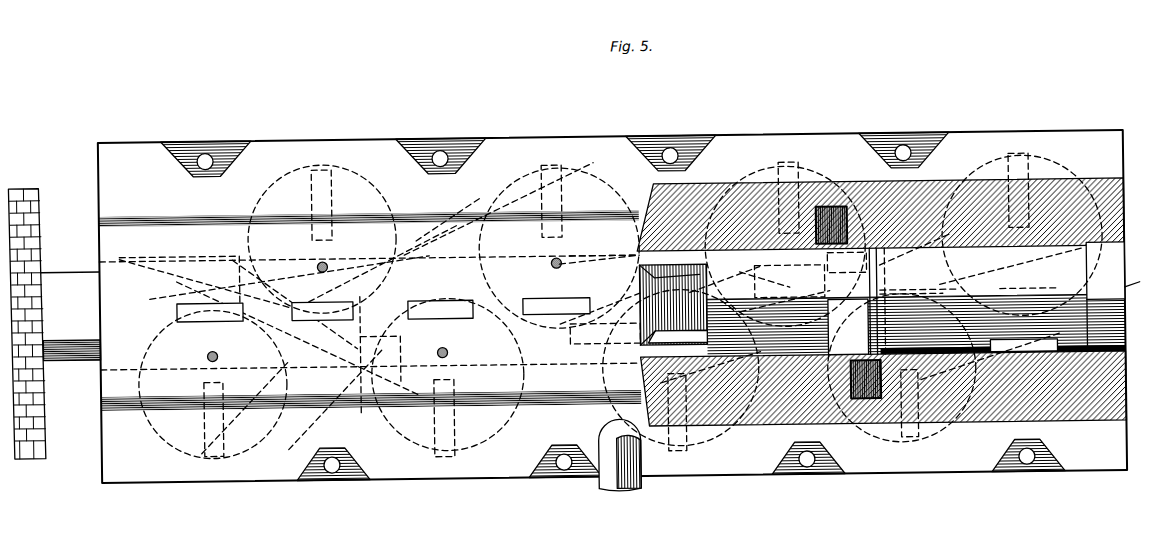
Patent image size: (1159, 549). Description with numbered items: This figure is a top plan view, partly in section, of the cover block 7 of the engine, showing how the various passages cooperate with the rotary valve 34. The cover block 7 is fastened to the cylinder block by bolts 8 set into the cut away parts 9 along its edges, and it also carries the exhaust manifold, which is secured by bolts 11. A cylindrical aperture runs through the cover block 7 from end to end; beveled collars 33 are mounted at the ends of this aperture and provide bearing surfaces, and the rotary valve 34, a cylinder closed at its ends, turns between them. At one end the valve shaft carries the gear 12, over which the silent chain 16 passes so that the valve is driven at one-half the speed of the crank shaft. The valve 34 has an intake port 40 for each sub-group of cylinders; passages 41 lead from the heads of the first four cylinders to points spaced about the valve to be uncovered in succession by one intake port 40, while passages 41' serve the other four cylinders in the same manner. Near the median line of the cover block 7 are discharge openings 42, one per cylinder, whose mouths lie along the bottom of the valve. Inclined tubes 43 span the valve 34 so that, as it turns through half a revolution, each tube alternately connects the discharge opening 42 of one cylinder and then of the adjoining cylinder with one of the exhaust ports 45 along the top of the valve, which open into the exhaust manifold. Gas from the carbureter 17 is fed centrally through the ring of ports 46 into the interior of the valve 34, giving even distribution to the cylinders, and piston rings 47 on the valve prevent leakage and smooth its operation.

The cover block 7 is at (526, 160).
The bolts 8 is at (207, 155).
The cut away parts 9 is at (230, 160).
The bolts 11 is at (319, 266).
The gear 12 is at (42, 270).
The silent chain 16 is at (38, 218).
The carbureter 17 is at (625, 497).
The beveled collars 33 is at (1137, 288).
The rotary valve 34 is at (1105, 296).
The intake port 40 is at (395, 302).
The passages 41 is at (389, 312).
The passages 41' is at (853, 306).
The discharge openings 42 is at (752, 300).
The tubes 43 is at (245, 275).
The exhaust ports 45 is at (330, 305).
The ring of ports 46 is at (585, 352).
The piston rings 47 is at (375, 318).